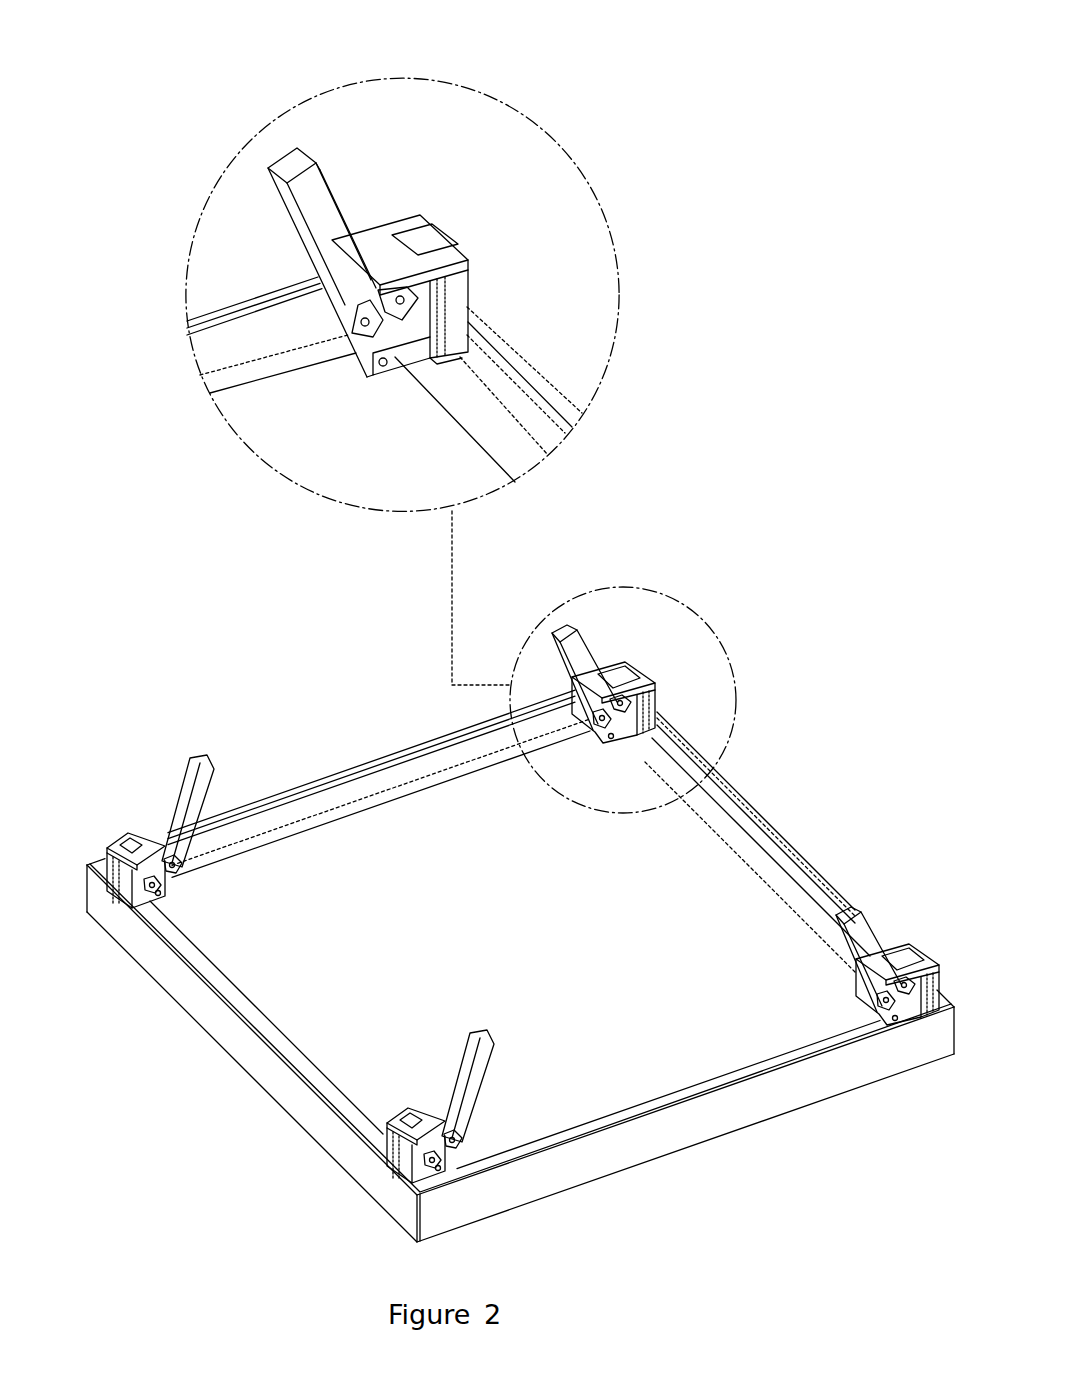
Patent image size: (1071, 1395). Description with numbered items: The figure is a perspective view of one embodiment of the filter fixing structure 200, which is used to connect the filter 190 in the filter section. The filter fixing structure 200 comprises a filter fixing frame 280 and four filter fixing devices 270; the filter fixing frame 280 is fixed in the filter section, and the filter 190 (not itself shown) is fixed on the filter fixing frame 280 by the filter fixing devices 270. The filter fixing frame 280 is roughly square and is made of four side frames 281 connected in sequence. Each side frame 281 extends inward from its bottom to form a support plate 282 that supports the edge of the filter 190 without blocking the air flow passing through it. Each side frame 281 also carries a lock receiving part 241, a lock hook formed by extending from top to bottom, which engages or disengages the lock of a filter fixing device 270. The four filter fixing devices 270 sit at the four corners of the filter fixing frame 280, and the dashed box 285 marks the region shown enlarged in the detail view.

The filter fixing structure 200 is at (831, 130).
The filter 190 is at (688, 892).
The lock receiving part 241 is at (497, 360).
The filter fixing device 270 is at (628, 668).
The filter fixing frame 280 is at (399, 742).
The side frame 281 is at (255, 1060).
The support plate 282 is at (330, 818).
The dashed box 285 is at (688, 603).